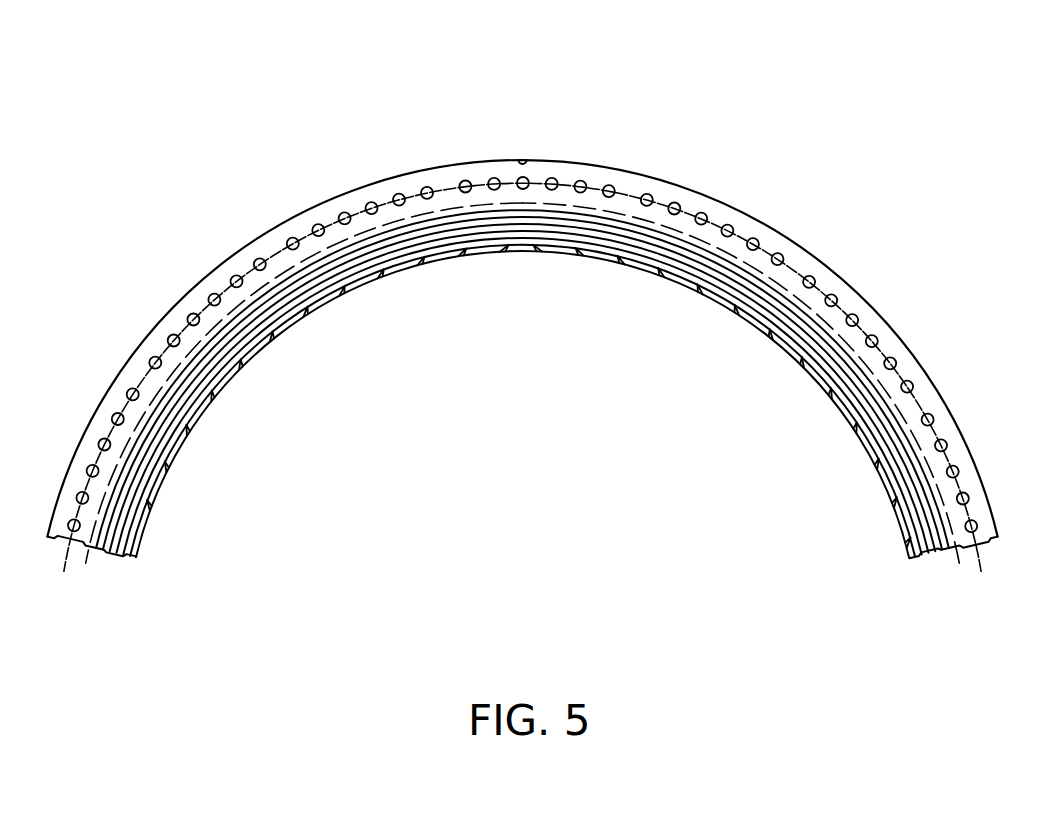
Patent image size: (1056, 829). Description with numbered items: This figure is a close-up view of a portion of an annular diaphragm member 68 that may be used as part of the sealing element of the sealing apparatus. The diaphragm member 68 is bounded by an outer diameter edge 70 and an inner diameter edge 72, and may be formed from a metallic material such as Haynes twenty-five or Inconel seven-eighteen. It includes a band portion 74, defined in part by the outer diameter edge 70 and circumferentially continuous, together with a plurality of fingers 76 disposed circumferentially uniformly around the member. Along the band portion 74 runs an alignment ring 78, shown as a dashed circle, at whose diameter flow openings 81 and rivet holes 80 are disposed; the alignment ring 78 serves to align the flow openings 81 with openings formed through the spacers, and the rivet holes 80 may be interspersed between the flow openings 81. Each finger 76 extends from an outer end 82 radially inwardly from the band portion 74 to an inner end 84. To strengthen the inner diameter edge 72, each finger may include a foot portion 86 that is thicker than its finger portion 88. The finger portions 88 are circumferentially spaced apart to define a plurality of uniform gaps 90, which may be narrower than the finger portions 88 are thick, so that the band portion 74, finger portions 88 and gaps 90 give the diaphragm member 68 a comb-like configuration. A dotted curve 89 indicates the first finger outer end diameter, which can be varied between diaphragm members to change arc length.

The diaphragm member 68 is at (840, 118).
The outer diameter edge 70 is at (806, 250).
The inner diameter edge 72 is at (640, 272).
The band portion 74 is at (665, 193).
The fingers 76 is at (480, 233).
The alignment ring 78 is at (279, 254).
The rivet holes 80 is at (893, 357).
The flow openings 81 is at (944, 441).
The outer end 82 is at (937, 481).
The inner end 84 is at (763, 332).
The foot portion 86 is at (716, 291).
The finger portion 88 is at (783, 327).
The first finger outer end diameter 89 is at (733, 248).
The gaps 90 is at (770, 303).